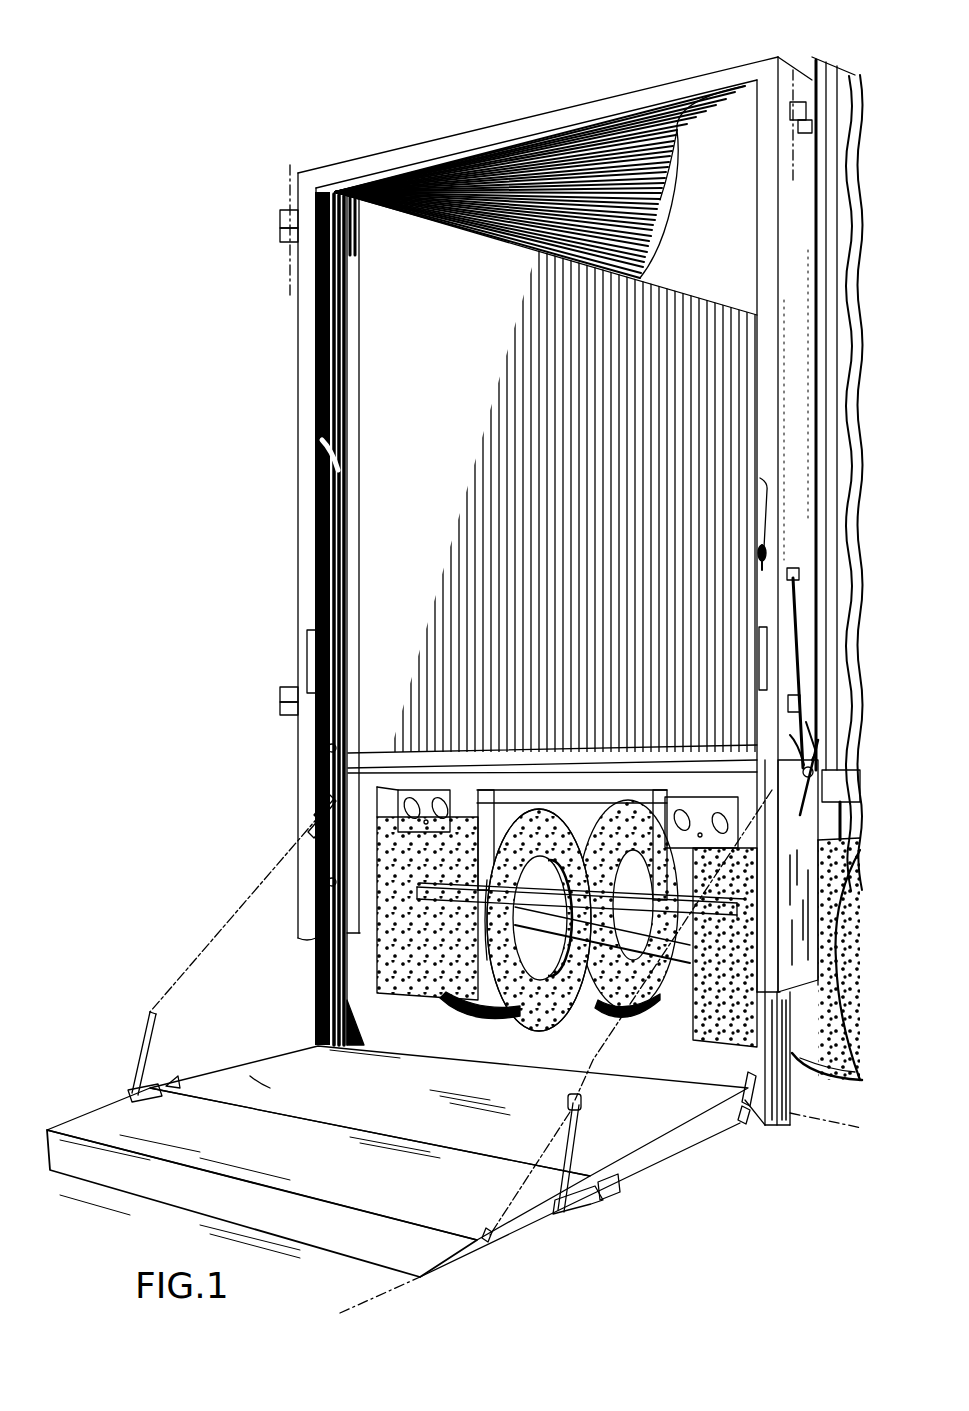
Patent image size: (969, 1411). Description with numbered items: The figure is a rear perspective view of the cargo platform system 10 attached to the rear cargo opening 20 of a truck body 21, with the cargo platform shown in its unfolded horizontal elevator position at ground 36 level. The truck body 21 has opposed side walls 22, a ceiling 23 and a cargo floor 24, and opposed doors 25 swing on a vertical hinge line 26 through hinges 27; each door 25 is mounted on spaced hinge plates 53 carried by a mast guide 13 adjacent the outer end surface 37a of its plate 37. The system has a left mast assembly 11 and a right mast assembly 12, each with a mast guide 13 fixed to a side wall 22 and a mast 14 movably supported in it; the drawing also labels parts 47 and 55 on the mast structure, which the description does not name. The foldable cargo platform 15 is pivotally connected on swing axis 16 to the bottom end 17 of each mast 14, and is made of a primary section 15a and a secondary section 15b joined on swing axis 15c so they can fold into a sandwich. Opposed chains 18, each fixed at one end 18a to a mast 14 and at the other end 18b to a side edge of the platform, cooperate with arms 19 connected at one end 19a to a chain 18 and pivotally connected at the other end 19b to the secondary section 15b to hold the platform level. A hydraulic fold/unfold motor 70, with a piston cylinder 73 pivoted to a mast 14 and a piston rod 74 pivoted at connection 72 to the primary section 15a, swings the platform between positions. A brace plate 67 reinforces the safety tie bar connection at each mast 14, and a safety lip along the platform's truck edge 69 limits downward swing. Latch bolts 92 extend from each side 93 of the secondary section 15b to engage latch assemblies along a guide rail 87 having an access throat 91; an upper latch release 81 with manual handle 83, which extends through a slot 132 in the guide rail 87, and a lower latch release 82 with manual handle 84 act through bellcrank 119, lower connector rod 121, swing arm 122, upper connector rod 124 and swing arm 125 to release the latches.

The cargo platform system 10 is at (210, 882).
The mast assembly 11 is at (364, 476).
The mast assembly 12 is at (750, 495).
The mast guide 13 is at (362, 418).
The mast 14 is at (345, 630).
The cargo platform 15 is at (397, 1148).
The primary section 15a is at (449, 1111).
The secondary section 15b is at (318, 1182).
The swing axis 15c is at (638, 1187).
The swing axis 16 is at (826, 1108).
The bottom end 17 is at (318, 1048).
The chain 18 is at (461, 1037).
The chain end 18a is at (328, 803).
The chain end 18b is at (492, 1238).
The arm 19 is at (384, 1136).
The arm end 19a is at (582, 1105).
The arm end 19b is at (564, 1214).
The rear cargo opening 20 is at (428, 250).
The truck body 21 is at (712, 72).
The side wall 22 is at (857, 275).
The ceiling 23 is at (696, 214).
The cargo floor 24 is at (668, 748).
The door 25 is at (850, 76).
The vertical hinge line 26 is at (288, 160).
The hinge 27 is at (278, 218).
The ground 36 is at (364, 1290).
The plate 37 is at (792, 394).
The outer end surface 37a is at (318, 446).
The post foot 47 is at (782, 1128).
The hinge plate 53 is at (280, 238).
The roller 55 is at (345, 646).
The brace plate 67 is at (354, 1026).
The truck edge 69 is at (514, 1080).
The fold/unfold motor 70 is at (744, 1116).
The pivotal connection 72 is at (735, 1128).
The piston cylinder 73 is at (750, 1074).
The piston rod 74 is at (745, 1110).
The latch release 81 is at (742, 563).
The latch release 82 is at (798, 822).
The manual handle 83 is at (758, 552).
The manual handle 84 is at (806, 790).
The guide rail 87 is at (306, 598).
The access throat 91 is at (307, 650).
The latch bolt 92 is at (160, 1100).
The side 93 is at (250, 1076).
The bellcrank 119 is at (835, 759).
The lower connector rod 121 is at (803, 770).
The swing arm 122 is at (788, 745).
The upper connector rod 124 is at (785, 620).
The swing arm 125 is at (792, 568).
The slot 132 is at (764, 486).